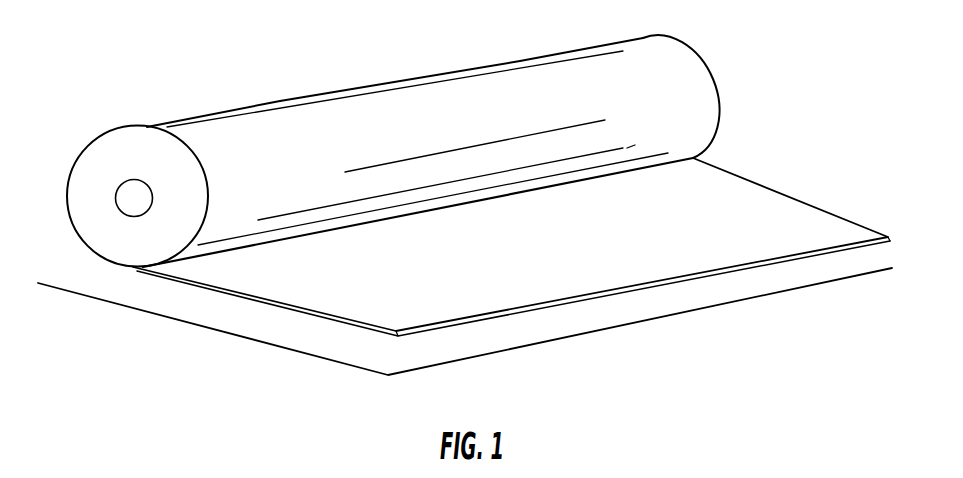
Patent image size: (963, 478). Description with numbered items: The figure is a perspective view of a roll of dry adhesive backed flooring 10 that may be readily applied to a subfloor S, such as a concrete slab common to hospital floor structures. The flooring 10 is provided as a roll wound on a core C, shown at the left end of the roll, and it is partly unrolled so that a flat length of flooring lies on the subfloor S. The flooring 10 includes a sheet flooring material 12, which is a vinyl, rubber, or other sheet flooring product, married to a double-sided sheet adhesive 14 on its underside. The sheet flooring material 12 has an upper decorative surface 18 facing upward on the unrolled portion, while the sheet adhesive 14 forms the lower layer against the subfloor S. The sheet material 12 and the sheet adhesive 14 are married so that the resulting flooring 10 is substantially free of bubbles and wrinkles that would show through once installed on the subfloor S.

The dry adhesive backed flooring 10 is at (393, 136).
The sheet flooring material 12 is at (511, 260).
The double-sided sheet adhesive 14 is at (358, 328).
The upper decorative surface 18 is at (564, 244).
The core C is at (128, 177).
The subfloor S is at (85, 293).